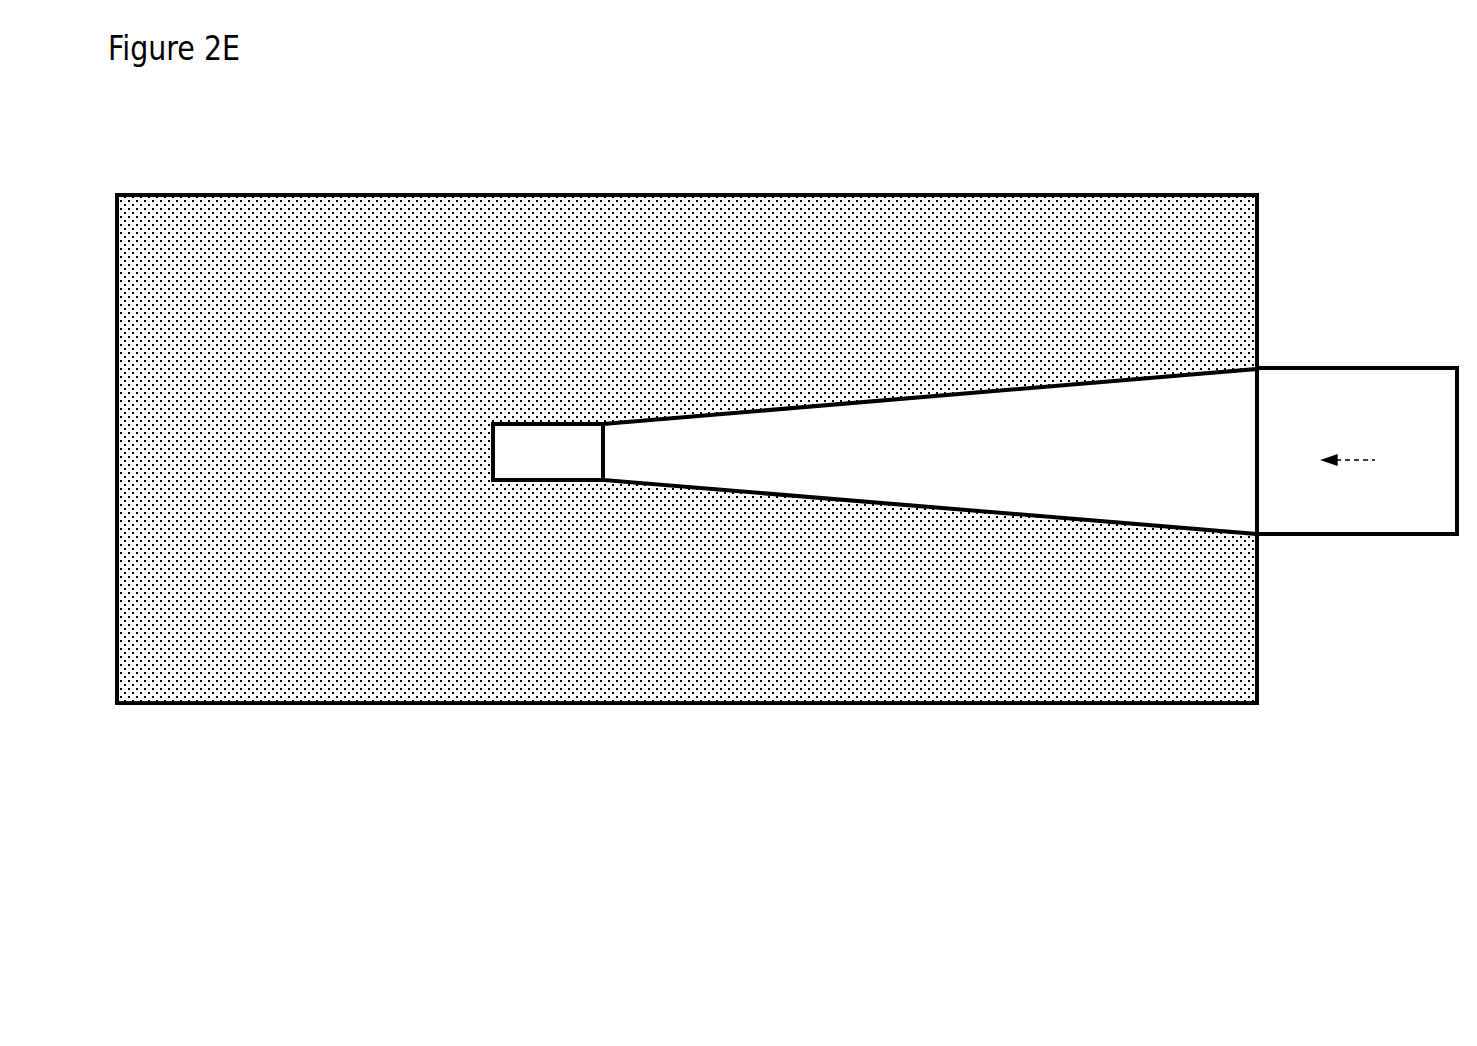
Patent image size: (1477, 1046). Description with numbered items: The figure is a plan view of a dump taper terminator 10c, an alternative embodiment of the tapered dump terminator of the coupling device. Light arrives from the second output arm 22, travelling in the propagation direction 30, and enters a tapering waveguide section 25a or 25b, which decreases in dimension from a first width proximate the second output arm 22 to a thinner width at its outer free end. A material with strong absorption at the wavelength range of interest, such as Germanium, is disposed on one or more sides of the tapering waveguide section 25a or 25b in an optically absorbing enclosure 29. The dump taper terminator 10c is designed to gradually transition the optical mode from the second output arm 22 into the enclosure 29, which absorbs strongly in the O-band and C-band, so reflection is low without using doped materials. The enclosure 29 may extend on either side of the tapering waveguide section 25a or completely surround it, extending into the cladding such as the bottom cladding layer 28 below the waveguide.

The dump taper terminator 10c is at (687, 414).
The optically absorbing enclosure 29 is at (687, 490).
The bottom cladding layer 28 is at (361, 784).
The tapering waveguide section 25a is at (875, 403).
The tapering waveguide section 25b is at (898, 420).
The second output arm 22 is at (1294, 393).
The propagation direction 30 is at (1358, 460).